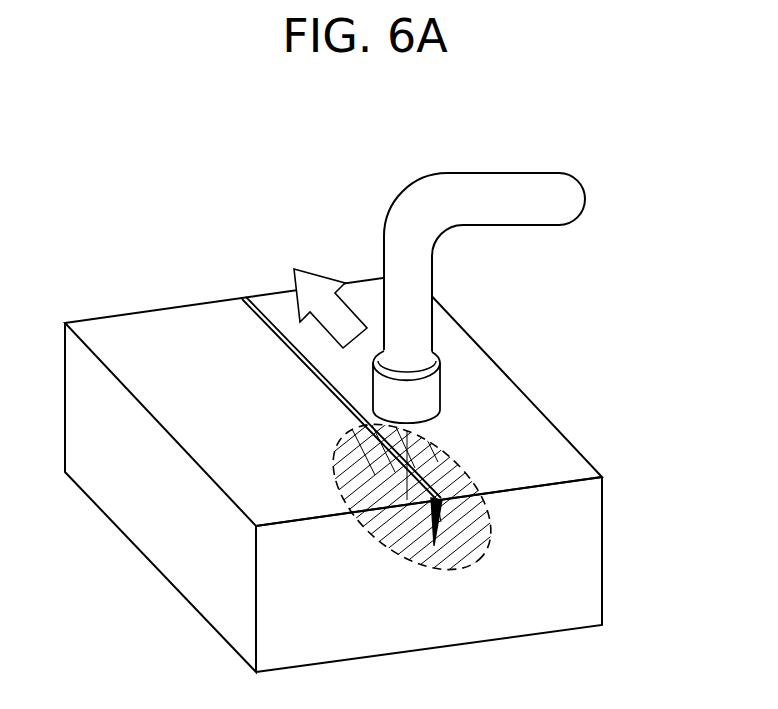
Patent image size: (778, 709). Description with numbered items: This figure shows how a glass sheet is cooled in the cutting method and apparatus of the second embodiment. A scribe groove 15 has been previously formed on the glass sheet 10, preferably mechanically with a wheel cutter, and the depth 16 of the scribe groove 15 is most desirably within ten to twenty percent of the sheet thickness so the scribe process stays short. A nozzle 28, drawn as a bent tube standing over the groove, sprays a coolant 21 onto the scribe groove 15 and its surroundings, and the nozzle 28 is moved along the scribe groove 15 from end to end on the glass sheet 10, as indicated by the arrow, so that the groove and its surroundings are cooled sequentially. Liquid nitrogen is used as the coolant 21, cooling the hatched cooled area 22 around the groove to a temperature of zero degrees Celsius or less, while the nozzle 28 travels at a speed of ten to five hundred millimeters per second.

The glass sheet 10 is at (120, 487).
The scribe groove 15 is at (265, 323).
The depth of the scribe groove 16 is at (480, 528).
The coolant 21 is at (448, 432).
The cooled area 22 is at (475, 485).
The nozzle 28 is at (428, 393).